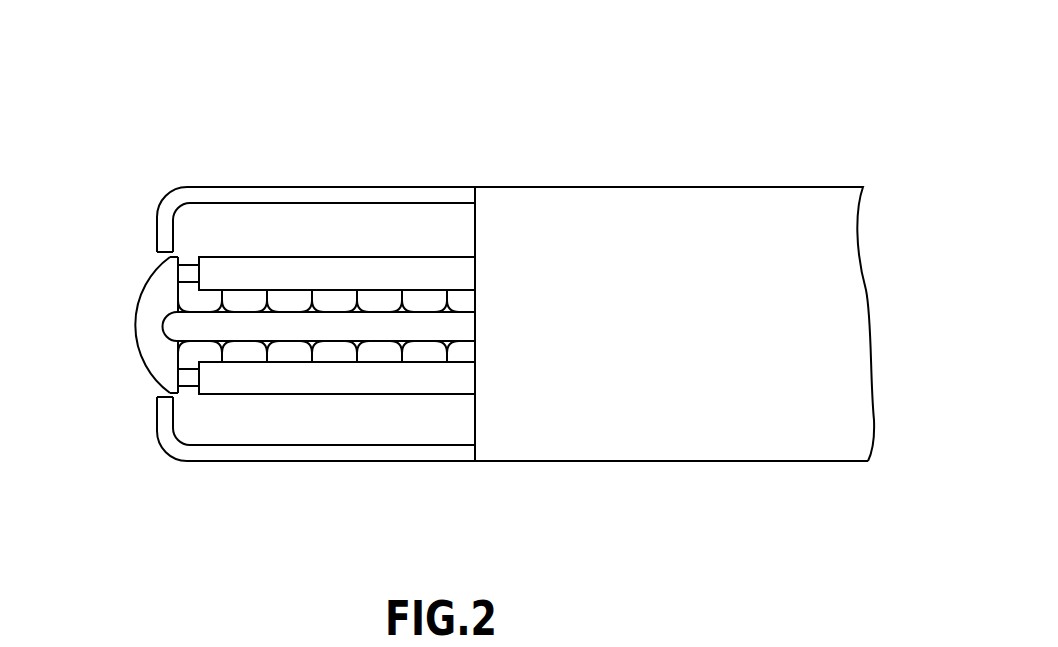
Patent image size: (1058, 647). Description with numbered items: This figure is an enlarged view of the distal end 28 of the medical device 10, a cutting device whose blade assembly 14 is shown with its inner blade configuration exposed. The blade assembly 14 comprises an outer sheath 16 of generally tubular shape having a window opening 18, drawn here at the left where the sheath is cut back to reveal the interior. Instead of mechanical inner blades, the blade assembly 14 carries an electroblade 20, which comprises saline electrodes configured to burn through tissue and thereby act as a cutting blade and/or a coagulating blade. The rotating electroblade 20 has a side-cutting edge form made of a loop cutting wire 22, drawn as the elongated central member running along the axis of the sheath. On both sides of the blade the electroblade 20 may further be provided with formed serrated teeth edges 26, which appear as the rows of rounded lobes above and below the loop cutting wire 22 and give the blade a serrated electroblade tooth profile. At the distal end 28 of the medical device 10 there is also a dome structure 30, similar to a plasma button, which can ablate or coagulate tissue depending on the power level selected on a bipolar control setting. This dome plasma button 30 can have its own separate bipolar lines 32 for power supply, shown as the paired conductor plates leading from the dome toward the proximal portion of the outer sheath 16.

The medical device 10 is at (118, 87).
The blade assembly 14 is at (810, 135).
The outer sheath 16 is at (755, 462).
The window opening 18 is at (180, 168).
The electroblade 20 is at (348, 324).
The loop cutting wire 22 is at (443, 325).
The serrated teeth edges 26 is at (292, 343).
The distal end 28 is at (74, 292).
The dome structure 30 is at (135, 338).
The bipolar lines 32 is at (277, 268).